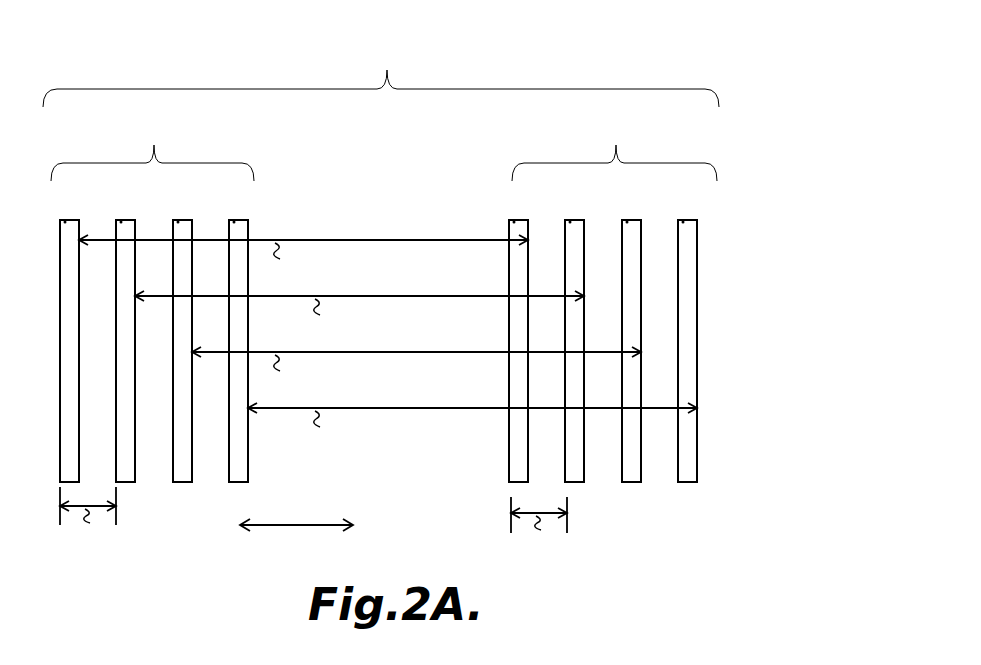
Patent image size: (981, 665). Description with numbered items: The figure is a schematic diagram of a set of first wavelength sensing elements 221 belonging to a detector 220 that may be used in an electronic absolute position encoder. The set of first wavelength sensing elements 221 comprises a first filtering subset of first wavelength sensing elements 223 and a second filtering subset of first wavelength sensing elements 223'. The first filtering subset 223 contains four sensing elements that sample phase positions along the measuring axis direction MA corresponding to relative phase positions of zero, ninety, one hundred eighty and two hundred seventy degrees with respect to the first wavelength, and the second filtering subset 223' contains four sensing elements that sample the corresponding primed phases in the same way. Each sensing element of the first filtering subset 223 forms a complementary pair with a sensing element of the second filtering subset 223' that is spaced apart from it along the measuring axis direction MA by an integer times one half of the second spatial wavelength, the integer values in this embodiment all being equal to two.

The detector 220 is at (689, 56).
The set of first wavelength sensing elements 221 is at (381, 73).
The first filtering subset of first wavelength sensing elements 223 is at (152, 299).
The second filtering subset of first wavelength sensing elements 223' is at (610, 299).